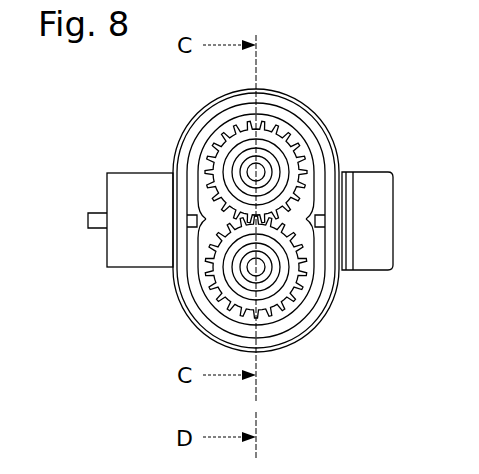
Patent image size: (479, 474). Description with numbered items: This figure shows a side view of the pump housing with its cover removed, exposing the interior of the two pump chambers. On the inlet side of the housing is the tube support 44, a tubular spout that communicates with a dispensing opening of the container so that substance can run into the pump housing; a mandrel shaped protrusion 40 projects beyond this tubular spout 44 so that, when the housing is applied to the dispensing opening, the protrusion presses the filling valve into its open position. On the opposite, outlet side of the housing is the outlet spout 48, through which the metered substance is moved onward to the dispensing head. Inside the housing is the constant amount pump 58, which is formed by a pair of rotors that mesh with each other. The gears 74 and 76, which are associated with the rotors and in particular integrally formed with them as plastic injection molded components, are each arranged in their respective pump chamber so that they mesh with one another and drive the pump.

The mandrel shaped protrusion 40 is at (96, 222).
The tube support 44 is at (138, 255).
The outlet spout 48 is at (379, 187).
The constant amount pump 58 is at (218, 298).
The gear 74 is at (270, 136).
The gear 76 is at (300, 268).